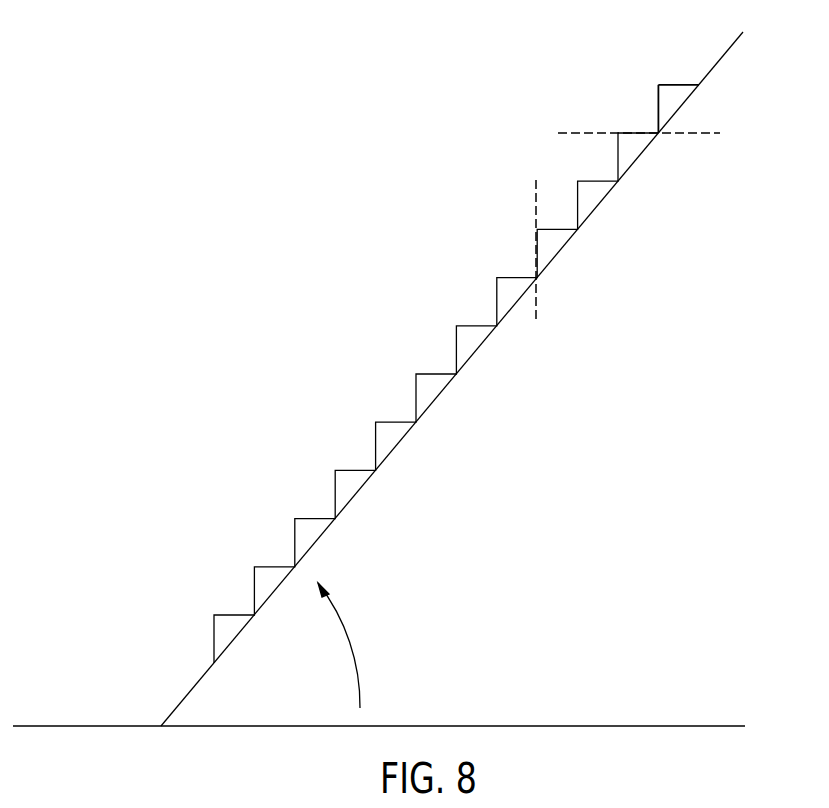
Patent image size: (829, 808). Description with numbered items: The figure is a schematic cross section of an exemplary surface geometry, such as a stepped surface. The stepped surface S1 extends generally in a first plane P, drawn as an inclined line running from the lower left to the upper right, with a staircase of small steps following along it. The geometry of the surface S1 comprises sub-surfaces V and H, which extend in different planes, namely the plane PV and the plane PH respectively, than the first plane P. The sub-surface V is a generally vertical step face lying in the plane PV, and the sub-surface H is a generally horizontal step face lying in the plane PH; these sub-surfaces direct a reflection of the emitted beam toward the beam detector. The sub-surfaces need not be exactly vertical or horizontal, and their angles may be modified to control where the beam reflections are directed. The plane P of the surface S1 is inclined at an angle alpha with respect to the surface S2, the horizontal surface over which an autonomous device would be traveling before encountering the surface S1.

The surface S1 is at (433, 326).
The surface S2 is at (62, 723).
The first plane P is at (703, 78).
The sub-surface V is at (657, 100).
The sub-surface H is at (683, 84).
The plane PH is at (574, 129).
The plane PV is at (533, 206).